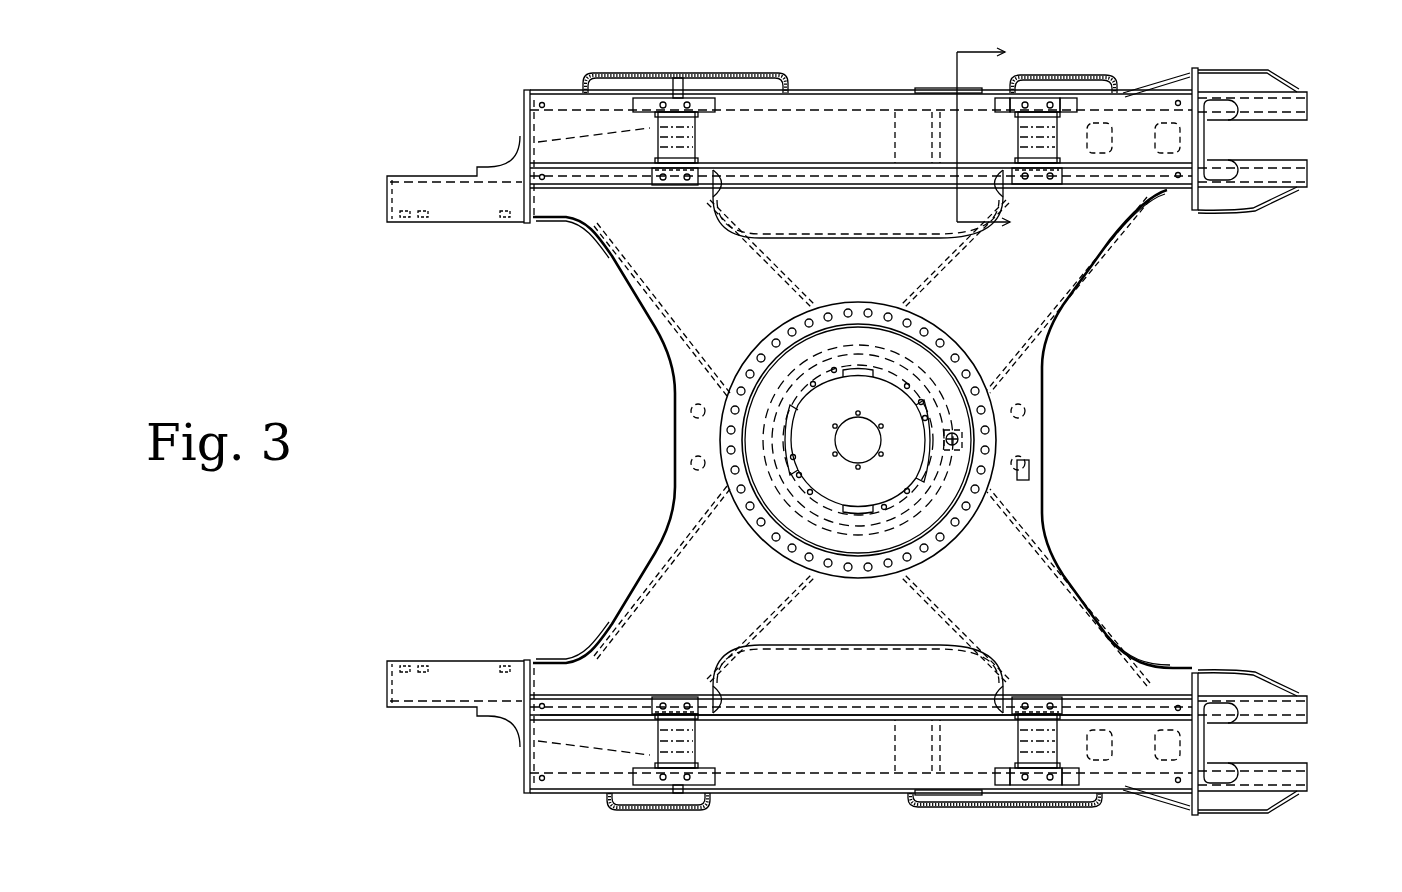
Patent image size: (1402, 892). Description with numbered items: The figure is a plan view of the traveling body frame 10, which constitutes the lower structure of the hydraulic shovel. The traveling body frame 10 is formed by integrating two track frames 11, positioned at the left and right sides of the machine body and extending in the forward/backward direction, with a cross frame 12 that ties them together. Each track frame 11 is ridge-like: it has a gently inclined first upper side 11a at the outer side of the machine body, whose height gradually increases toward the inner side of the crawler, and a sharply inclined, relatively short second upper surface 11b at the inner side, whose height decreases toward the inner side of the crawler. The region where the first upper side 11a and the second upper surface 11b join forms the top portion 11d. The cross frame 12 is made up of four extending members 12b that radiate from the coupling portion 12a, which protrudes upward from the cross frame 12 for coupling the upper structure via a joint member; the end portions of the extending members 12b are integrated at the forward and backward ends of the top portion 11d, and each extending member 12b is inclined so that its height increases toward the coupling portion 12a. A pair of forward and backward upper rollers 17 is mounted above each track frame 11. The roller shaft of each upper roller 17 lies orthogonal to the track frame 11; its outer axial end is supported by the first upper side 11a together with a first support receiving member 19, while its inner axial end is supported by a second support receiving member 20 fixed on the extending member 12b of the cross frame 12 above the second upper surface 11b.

The traveling body frame 10 is at (1334, 84).
The track frame 11 is at (1252, 67).
The first upper side 11a is at (834, 127).
The second upper surface 11b is at (848, 175).
The top portion 11d is at (807, 713).
The cross frame 12 is at (1096, 385).
The coupling portion 12a is at (960, 465).
The extending member 12b is at (613, 211).
The upper roller 17 is at (697, 160).
The first support receiving member 19 is at (673, 97).
The second support receiving member 20 is at (675, 190).